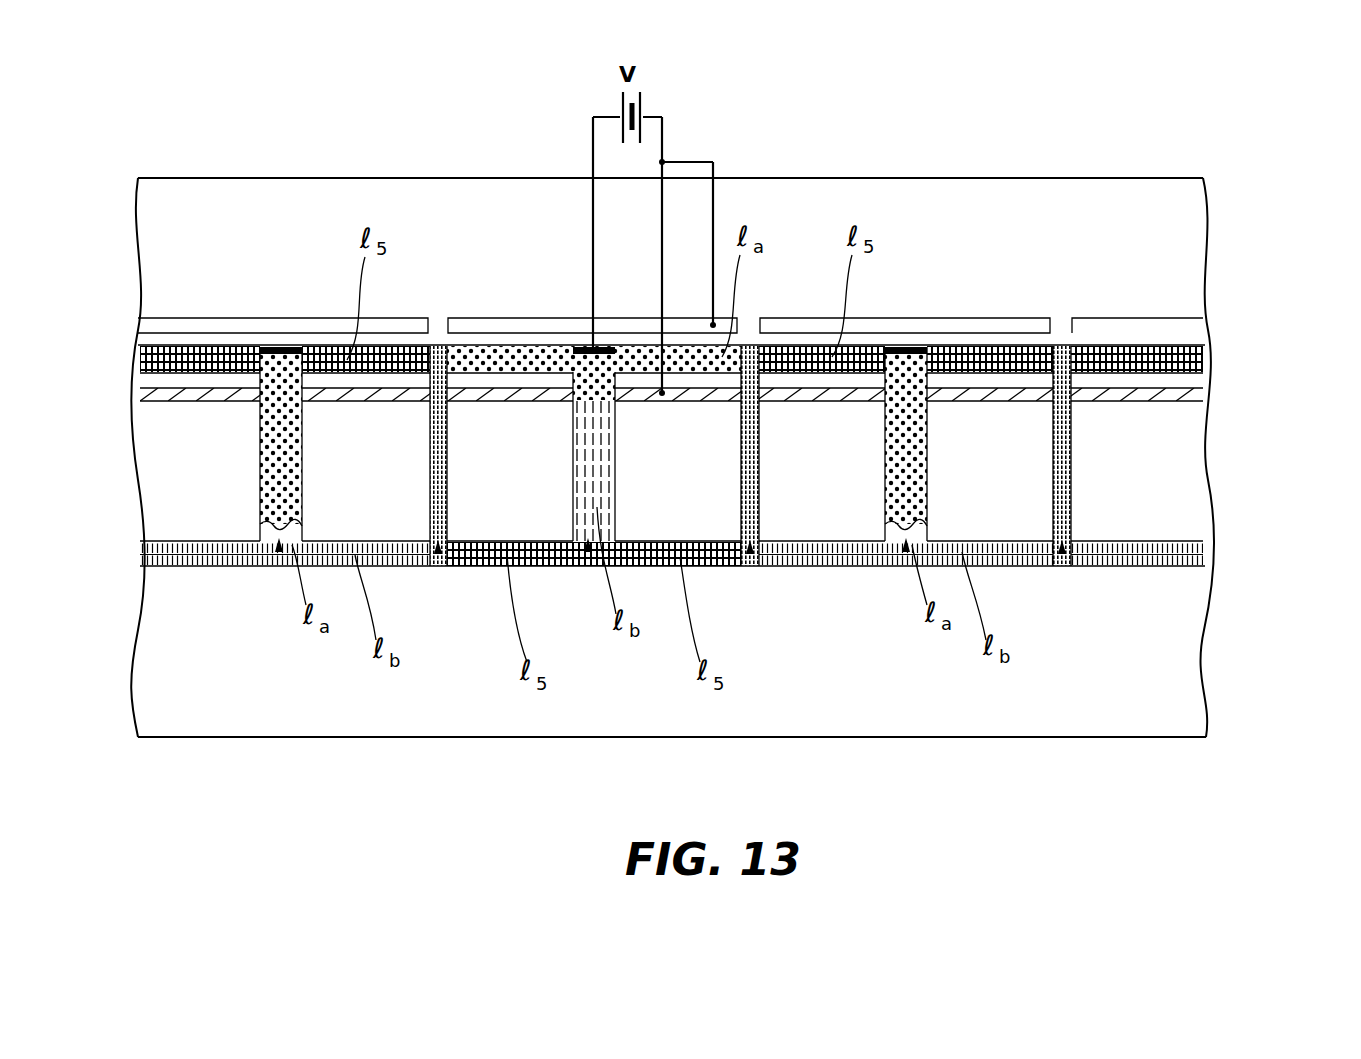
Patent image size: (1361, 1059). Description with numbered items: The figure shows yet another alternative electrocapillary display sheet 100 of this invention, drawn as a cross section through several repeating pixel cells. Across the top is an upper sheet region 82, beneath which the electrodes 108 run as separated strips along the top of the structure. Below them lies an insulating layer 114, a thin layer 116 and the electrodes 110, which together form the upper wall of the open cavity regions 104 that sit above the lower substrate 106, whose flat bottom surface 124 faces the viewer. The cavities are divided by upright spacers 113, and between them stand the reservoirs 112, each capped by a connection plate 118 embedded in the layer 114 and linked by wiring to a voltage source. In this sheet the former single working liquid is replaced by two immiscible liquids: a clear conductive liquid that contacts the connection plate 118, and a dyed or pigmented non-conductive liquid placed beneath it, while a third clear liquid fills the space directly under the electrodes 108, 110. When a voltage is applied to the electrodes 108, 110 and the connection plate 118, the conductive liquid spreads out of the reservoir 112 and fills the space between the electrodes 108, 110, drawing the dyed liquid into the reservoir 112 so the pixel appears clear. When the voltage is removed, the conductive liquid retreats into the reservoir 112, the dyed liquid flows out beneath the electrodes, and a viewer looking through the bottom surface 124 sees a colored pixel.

The electrocapillary display sheet 100 is at (1084, 60).
The faceplate 82 is at (1185, 227).
The vacuum cavity 104 is at (1185, 462).
The baseplate substrate 106 is at (1185, 648).
The electrode 108 is at (155, 320).
The electrode 110 is at (198, 402).
The reservoir 112 is at (279, 552).
The spacer 113 is at (440, 556).
The insulating layer 114 is at (455, 340).
The dielectric layer 116 is at (237, 387).
The connection plate 118 is at (283, 347).
The bottom surface of baseplate 124 is at (305, 739).